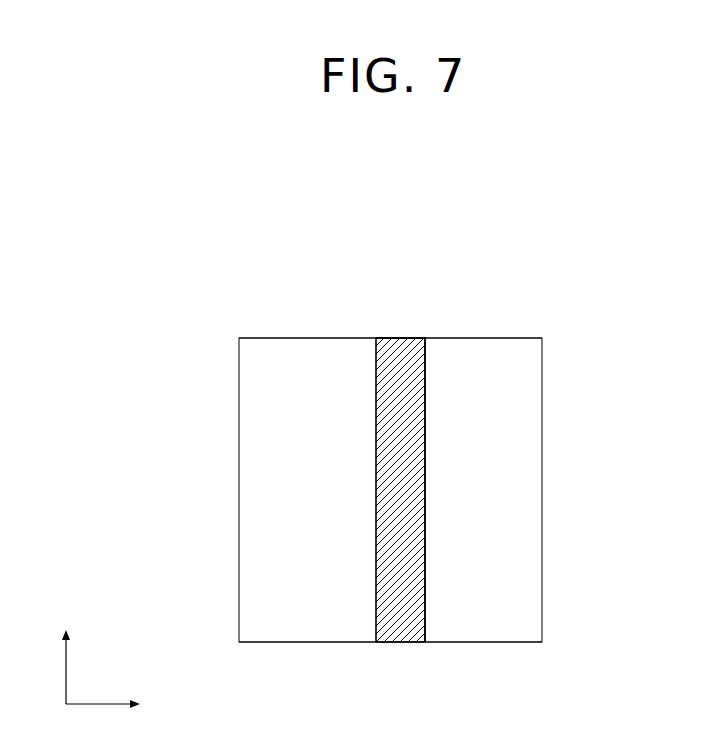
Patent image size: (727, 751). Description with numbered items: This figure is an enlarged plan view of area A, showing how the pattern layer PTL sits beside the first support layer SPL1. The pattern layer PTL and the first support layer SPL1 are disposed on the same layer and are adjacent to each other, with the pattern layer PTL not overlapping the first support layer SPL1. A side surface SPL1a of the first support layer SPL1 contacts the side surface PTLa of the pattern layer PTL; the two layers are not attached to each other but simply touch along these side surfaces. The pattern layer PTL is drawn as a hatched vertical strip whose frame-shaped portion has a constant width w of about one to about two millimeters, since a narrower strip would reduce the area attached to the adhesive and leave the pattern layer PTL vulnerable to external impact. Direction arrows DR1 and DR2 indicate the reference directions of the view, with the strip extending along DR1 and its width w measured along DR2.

The area A is at (239, 490).
The pattern layer PTL is at (395, 642).
The side surface of the pattern layer PTLa is at (411, 360).
The first support layer SPL1 is at (487, 630).
The side surface of the first support layer SPL1a is at (425, 413).
The width w is at (425, 490).
The first direction DR1 is at (68, 654).
The second direction DR2 is at (124, 709).